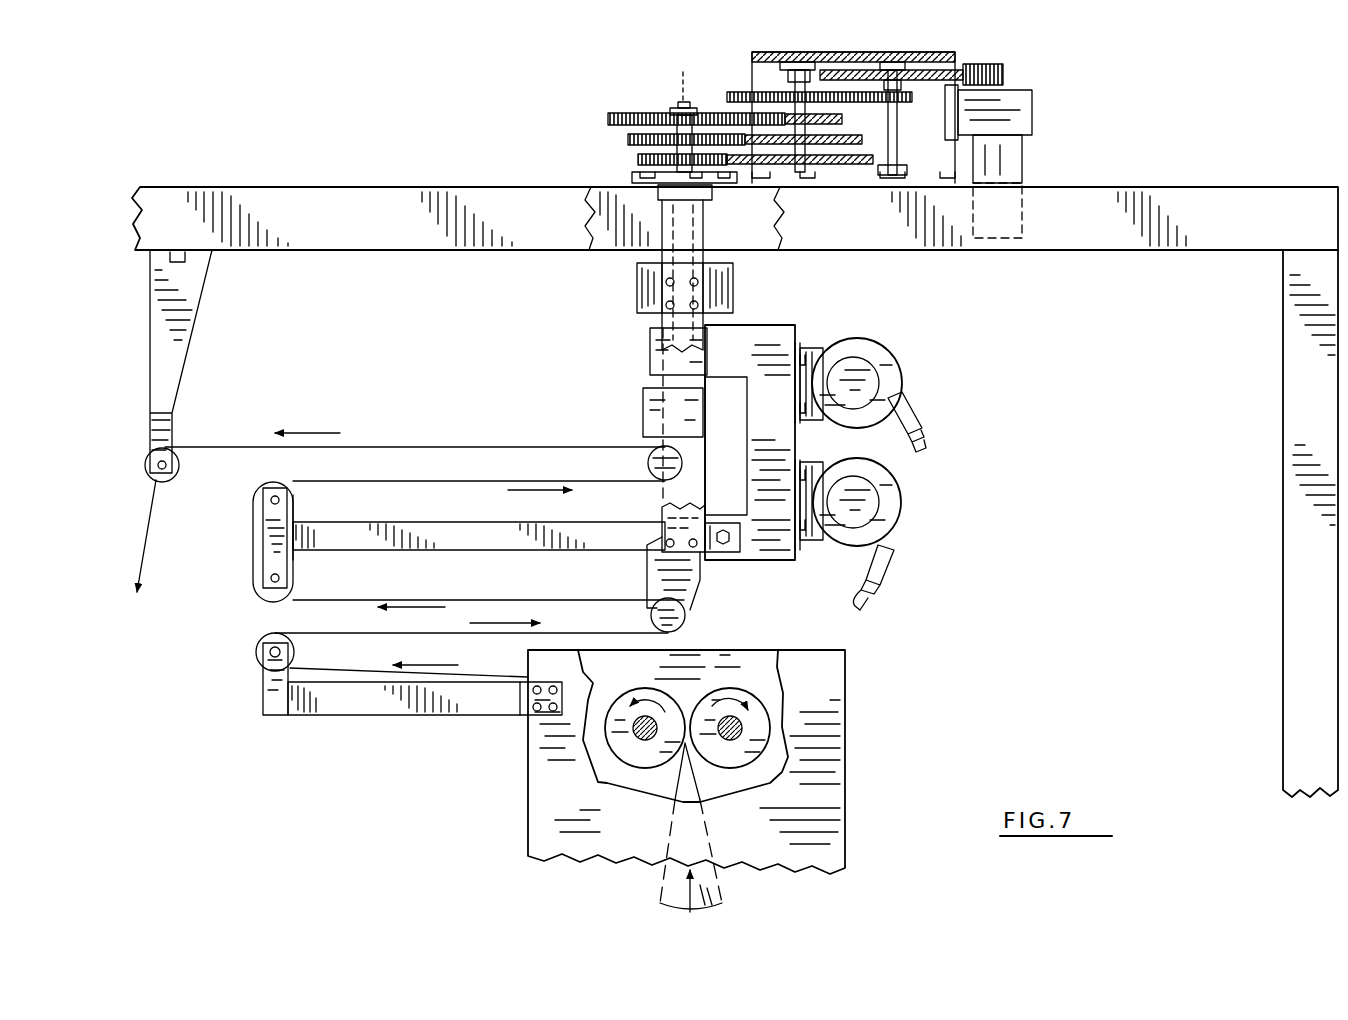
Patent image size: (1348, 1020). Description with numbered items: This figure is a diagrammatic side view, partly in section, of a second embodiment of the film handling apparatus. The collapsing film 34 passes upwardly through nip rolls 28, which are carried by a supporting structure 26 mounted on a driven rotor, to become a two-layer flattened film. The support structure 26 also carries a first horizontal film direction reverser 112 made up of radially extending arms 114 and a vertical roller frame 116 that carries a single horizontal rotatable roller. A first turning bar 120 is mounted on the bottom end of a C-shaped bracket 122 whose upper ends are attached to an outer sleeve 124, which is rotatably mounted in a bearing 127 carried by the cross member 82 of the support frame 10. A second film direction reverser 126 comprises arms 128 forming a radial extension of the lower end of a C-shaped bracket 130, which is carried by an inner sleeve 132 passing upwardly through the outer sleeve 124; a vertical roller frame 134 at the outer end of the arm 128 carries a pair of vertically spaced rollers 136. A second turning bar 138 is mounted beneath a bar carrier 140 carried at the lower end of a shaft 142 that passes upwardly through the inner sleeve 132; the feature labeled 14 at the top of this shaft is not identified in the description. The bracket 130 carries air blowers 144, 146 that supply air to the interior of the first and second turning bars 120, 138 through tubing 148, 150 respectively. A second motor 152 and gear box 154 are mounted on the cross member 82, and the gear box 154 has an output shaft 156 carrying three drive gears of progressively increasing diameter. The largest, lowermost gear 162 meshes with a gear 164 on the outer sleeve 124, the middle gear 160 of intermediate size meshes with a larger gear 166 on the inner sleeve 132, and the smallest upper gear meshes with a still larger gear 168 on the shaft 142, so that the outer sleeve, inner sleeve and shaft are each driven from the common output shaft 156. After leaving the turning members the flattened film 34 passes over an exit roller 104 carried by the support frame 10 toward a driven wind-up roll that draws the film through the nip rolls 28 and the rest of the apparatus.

The support frame 10 is at (1285, 485).
The drive shaft 14 is at (683, 77).
The supporting structure 26 is at (540, 788).
The nip rolls 28 is at (707, 700).
The film 34 is at (413, 446).
The cross member 82 is at (458, 187).
The exit roller 104 is at (162, 482).
The first horizontal film direction reverser 112 is at (252, 706).
The radially extending arms 114 is at (345, 720).
The vertical roller frame 116 is at (263, 680).
The first turning bar 120 is at (648, 617).
The C-shaped bracket 122 is at (673, 512).
The outer sleeve 124 is at (655, 235).
The second film direction reverser 126 is at (240, 549).
The bearing 127 is at (707, 205).
The arms 128 is at (370, 535).
The C-shaped bracket 130 is at (757, 358).
The inner sleeve 132 is at (700, 362).
The vertical roller frame 134 is at (263, 530).
The pair of vertically spaced rollers 136 is at (293, 503).
The second turning bar 138 is at (648, 462).
The bar carrier 140 is at (643, 400).
The shaft 142 is at (675, 105).
The air blower 144 is at (897, 497).
The air blower 146 is at (883, 355).
The tubing 148 is at (870, 602).
The tubing 150 is at (923, 437).
The second motor 152 is at (1018, 128).
The gear box 154 is at (963, 45).
The output shaft 156 is at (793, 70).
The middle drive gear 160 is at (832, 160).
The largest lowermost drive gear 162 is at (866, 160).
The gear 164 is at (640, 158).
The gear 166 is at (628, 138).
The gear 168 is at (617, 113).